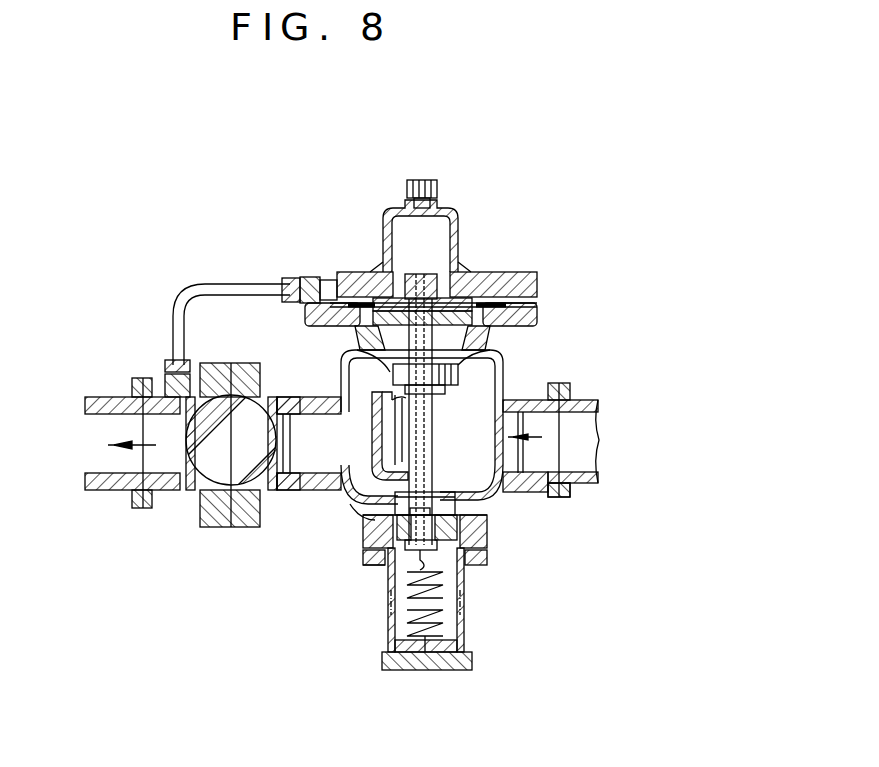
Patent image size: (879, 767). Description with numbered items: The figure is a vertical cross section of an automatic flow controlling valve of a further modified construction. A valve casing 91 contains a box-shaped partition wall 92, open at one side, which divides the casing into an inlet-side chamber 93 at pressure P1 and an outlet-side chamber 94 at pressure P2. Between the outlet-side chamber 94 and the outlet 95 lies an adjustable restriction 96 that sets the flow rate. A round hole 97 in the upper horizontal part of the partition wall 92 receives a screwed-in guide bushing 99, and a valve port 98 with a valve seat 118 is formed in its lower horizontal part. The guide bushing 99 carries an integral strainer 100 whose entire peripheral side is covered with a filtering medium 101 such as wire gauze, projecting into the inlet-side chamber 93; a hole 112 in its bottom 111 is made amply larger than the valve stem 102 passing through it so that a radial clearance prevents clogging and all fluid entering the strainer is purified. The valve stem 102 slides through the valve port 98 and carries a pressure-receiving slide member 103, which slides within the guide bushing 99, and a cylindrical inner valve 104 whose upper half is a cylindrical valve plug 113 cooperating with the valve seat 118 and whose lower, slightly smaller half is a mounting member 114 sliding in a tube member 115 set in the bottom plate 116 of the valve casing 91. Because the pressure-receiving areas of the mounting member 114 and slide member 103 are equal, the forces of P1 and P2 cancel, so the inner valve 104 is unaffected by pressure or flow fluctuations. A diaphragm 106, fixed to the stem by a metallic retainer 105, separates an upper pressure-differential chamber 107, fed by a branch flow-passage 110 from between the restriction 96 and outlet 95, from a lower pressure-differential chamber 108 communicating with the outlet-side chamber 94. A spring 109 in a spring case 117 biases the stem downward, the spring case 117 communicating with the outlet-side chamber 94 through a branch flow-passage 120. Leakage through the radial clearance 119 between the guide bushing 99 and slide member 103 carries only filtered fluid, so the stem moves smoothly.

The valve casing 91 is at (503, 375).
The partition wall 92 is at (372, 436).
The inlet-side chamber 93 is at (528, 416).
The outlet-side chamber 94 is at (300, 408).
The outlet 95 is at (168, 478).
The restriction 96 is at (236, 508).
The round hole 97 is at (460, 370).
The valve port 98 is at (438, 480).
The guide bushing 99 is at (470, 362).
The strainer 100 is at (373, 455).
The filtering medium 101 is at (350, 380).
The valve stem 102 is at (490, 486).
The pressure-receiving slide member 103 is at (330, 316).
The cylindrical inner valve 104 is at (363, 520).
The metallic retainer 105 is at (385, 272).
The diaphragm 106 is at (458, 300).
The upper pressure-differential chamber 107 is at (412, 222).
The lower pressure-differential chamber 108 is at (374, 318).
The spring 109 is at (457, 618).
The branch flow-passage 110 is at (214, 283).
The bottom 111 is at (570, 492).
The hole 112 is at (348, 490).
The cylindrical valve plug 113 is at (490, 516).
The mounting member 114 is at (487, 532).
The tube member 115 is at (375, 565).
The bottom plate 116 is at (363, 555).
The spring case 117 is at (388, 630).
The valve seat 118 is at (357, 502).
The radial clearance 119 is at (392, 372).
The branch flow-passage 120 is at (487, 554).
The inlet-side pressure P1 is at (502, 440).
The outlet-side pressure P2 is at (308, 437).